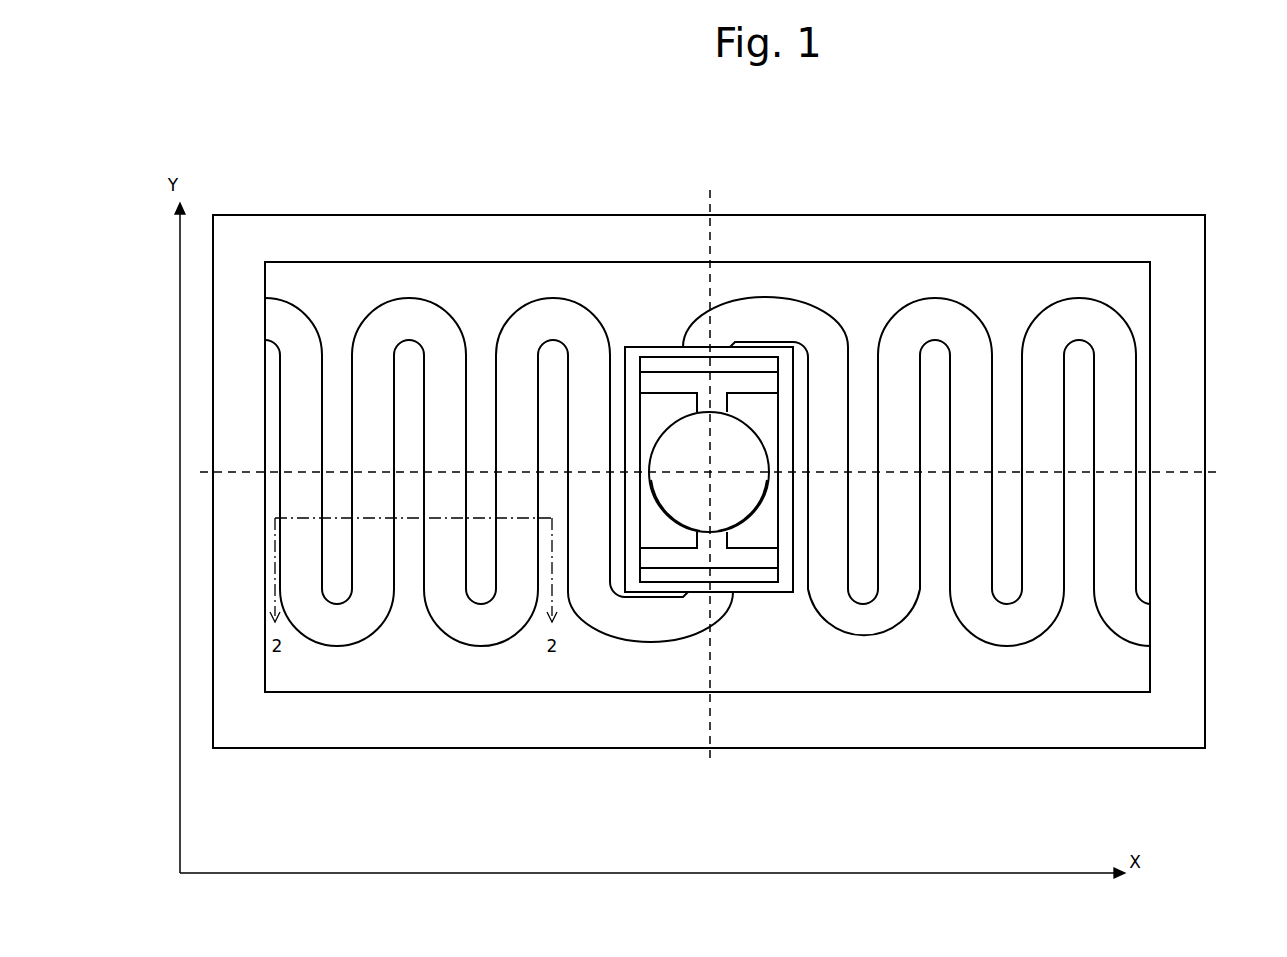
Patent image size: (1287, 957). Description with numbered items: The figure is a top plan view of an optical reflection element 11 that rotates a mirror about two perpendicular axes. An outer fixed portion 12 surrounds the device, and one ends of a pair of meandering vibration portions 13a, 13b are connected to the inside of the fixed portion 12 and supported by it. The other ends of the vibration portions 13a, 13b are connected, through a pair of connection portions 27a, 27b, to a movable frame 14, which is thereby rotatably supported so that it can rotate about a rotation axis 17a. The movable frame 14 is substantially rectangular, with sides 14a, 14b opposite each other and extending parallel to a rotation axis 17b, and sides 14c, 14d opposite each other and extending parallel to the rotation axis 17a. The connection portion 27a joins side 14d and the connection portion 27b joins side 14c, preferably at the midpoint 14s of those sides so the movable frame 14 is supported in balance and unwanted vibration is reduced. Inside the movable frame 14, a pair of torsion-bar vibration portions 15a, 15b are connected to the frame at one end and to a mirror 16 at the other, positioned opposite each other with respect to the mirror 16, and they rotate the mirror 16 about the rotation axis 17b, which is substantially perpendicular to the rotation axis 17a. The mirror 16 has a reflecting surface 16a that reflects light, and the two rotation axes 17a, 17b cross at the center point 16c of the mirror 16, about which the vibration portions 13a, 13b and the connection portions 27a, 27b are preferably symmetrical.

The optical reflection element 11 is at (291, 215).
The fixed portion 12 is at (1087, 233).
The vibration portion 13a is at (398, 307).
The vibration portion 13b is at (933, 308).
The movable frame 14 is at (652, 347).
The side of movable frame 14a is at (633, 393).
The side of movable frame 14b is at (786, 393).
The side of movable frame 14c is at (662, 355).
The side of movable frame 14d is at (740, 585).
The midpoint of sides 14s is at (710, 350).
The vibration portion 15a is at (742, 378).
The vibration portion 15b is at (680, 558).
The mirror 16 is at (711, 475).
The reflecting surface 16a is at (685, 502).
The center point of mirror 16c is at (753, 492).
The rotation axis 17a is at (1215, 470).
The rotation axis 17b is at (713, 202).
The connection portion 27a is at (700, 598).
The connection portion 27b is at (725, 340).